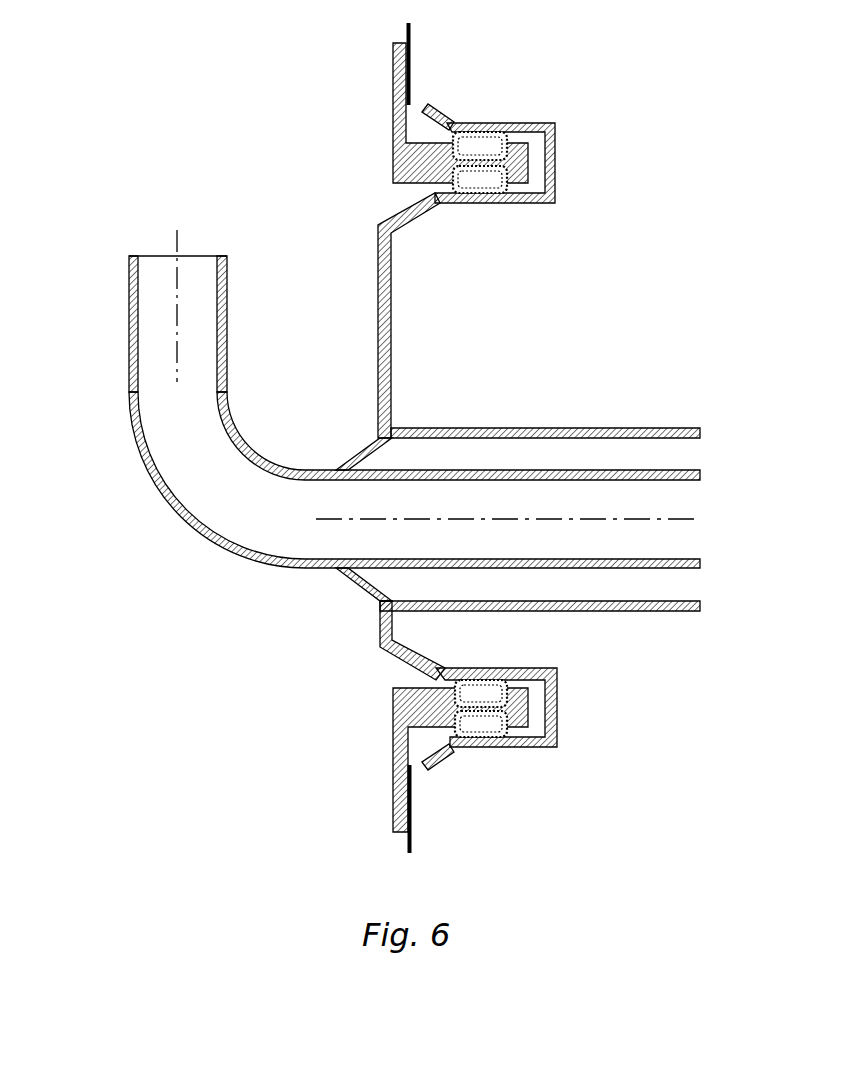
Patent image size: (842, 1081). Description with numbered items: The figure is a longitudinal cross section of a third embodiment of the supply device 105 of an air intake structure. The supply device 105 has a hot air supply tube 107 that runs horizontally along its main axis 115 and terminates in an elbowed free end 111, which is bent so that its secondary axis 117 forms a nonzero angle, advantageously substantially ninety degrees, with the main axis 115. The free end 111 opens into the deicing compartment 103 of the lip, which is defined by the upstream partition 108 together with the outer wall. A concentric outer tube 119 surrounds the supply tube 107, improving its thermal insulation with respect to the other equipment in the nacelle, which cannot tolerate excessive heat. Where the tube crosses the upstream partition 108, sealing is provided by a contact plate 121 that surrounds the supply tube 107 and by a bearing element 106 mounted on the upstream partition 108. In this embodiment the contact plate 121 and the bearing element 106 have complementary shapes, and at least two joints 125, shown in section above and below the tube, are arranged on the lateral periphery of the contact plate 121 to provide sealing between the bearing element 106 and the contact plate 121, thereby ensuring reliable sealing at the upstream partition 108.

The deicing compartment 103 is at (90, 211).
The supply device 105 is at (597, 243).
The bearing element 106 is at (393, 100).
The hot air supply tube 107 is at (180, 530).
The upstream partition 108 is at (410, 68).
The elbowed free end 111 is at (130, 284).
The main axis 115 is at (673, 518).
The secondary axis 117 is at (177, 243).
The concentric outer tube 119 is at (590, 428).
The contact plate 121 is at (378, 258).
The joints 125 is at (493, 146).